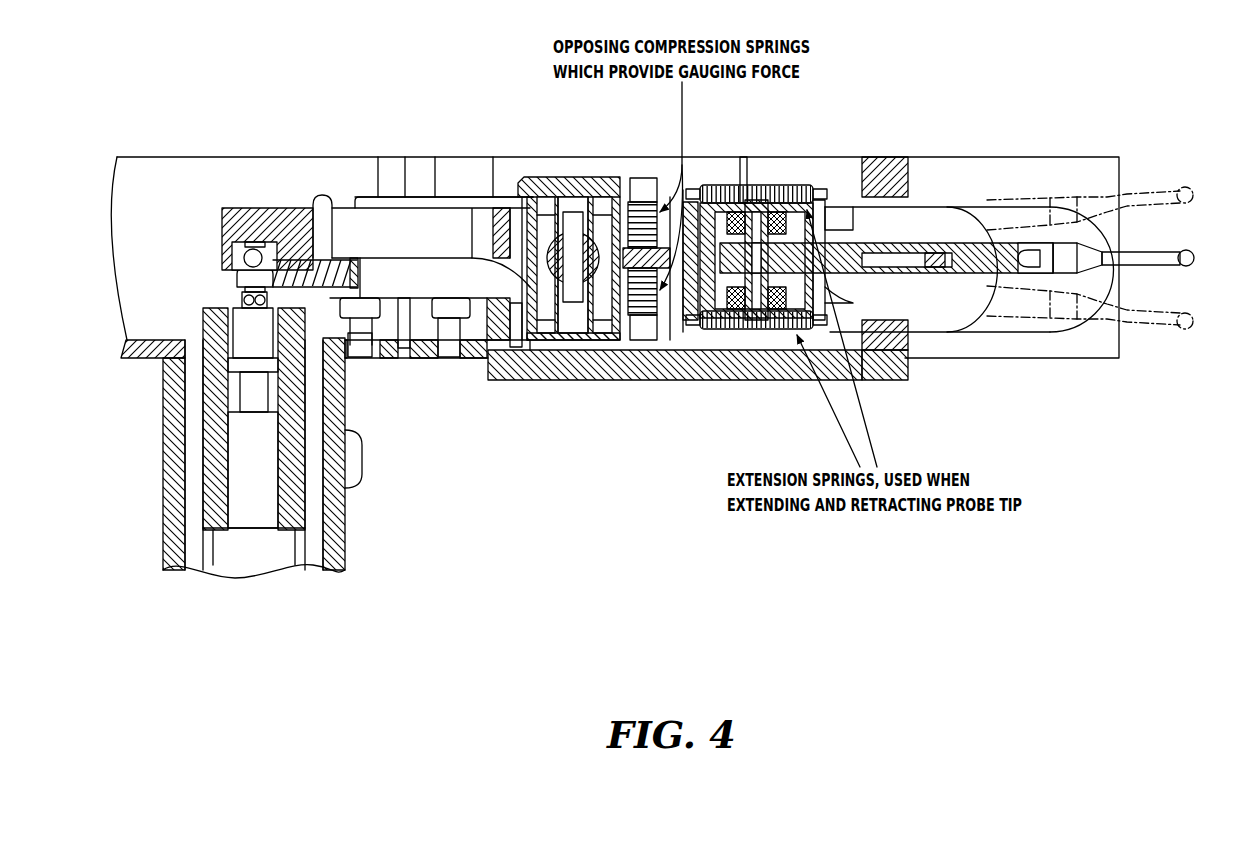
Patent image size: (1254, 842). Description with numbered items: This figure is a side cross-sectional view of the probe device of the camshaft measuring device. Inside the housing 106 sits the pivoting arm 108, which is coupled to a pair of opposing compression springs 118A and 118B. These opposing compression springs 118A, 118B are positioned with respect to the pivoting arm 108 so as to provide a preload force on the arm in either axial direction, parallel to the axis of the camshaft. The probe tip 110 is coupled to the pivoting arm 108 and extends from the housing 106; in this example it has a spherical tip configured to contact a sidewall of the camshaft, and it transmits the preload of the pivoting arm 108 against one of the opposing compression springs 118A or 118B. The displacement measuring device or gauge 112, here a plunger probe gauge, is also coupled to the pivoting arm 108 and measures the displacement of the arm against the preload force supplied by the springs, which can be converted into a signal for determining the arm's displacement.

The housing 106 is at (212, 58).
The pivoting arm 108 is at (980, 270).
The probe tip 110 is at (1180, 246).
The displacement measuring device or gauge 112 is at (228, 255).
The opposing compression spring 118A is at (632, 197).
The opposing compression spring 118B is at (632, 322).